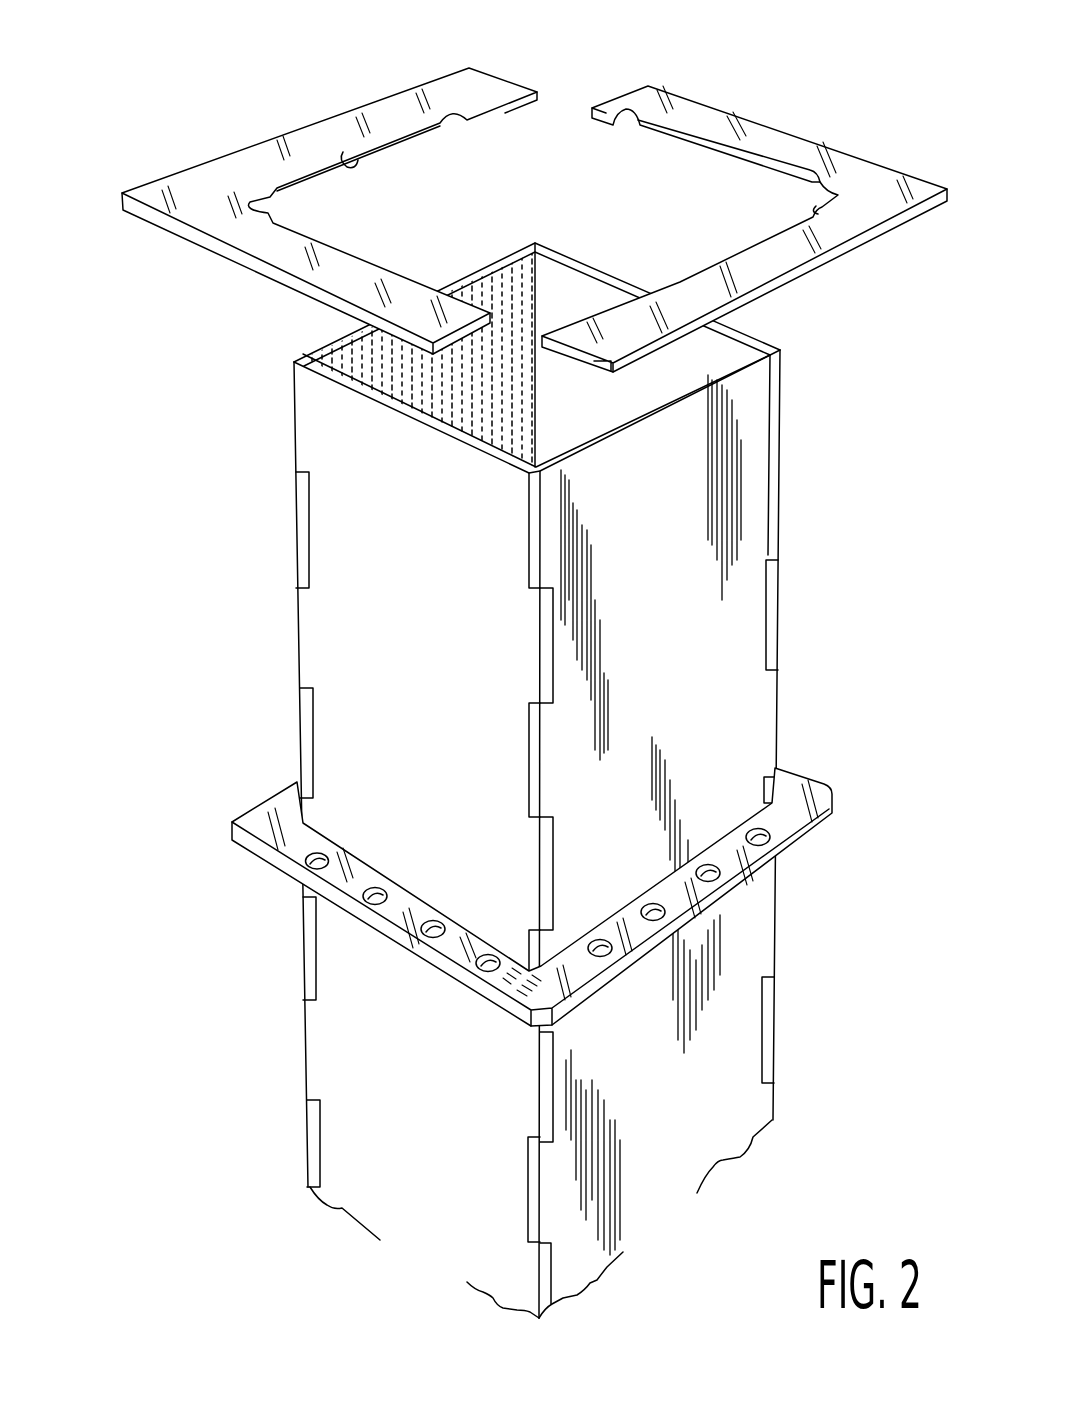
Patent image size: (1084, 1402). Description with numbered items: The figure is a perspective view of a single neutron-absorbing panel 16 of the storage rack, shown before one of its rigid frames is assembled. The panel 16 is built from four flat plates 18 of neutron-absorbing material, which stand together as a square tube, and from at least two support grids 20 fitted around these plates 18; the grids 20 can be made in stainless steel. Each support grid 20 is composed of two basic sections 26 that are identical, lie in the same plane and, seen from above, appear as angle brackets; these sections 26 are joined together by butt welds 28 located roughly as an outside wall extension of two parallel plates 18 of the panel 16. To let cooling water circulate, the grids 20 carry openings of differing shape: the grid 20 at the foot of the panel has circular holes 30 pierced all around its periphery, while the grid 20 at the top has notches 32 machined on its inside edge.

The neutron-absorbing panel 16 is at (529, 780).
The flat plate 18 is at (323, 342).
The support grid 20 is at (534, 547).
The basic section 26 is at (534, 561).
The weld 28 is at (503, 967).
The circular hole 30 is at (364, 899).
The notch 32 is at (343, 165).